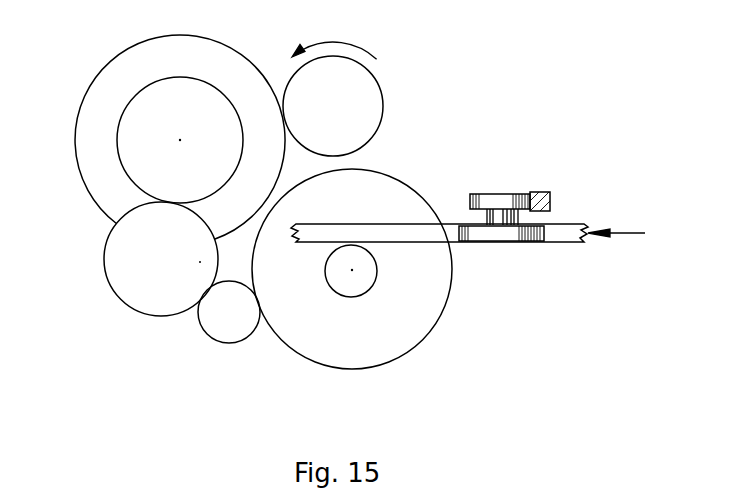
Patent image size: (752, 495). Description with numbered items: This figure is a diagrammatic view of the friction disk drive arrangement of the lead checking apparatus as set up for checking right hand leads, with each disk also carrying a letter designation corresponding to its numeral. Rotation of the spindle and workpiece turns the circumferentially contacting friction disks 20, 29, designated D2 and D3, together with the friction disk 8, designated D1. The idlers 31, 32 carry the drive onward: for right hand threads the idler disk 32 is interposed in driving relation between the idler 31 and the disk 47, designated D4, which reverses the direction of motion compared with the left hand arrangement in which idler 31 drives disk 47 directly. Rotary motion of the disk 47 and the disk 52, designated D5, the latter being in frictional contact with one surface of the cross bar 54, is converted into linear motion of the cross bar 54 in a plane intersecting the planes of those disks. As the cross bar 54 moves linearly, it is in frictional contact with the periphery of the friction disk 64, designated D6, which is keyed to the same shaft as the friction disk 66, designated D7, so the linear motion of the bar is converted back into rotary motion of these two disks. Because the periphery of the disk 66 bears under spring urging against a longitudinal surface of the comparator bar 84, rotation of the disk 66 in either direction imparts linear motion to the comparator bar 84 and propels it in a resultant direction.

The friction disk 20 is at (160, 44).
The friction disk 29 is at (127, 134).
The friction disk 8 is at (377, 125).
The idler disk 31 is at (112, 275).
The idler disk 32 is at (207, 330).
The friction disk 47 is at (440, 307).
The friction disk 52 is at (375, 267).
The cross bar 54 is at (566, 231).
The friction disk 64 is at (522, 234).
The friction disk 66 is at (505, 195).
The comparator bar 84 is at (545, 192).
The friction disk designation D1 is at (378, 98).
The friction disk designation D2 is at (112, 73).
The friction disk designation D3 is at (125, 152).
The friction disk designation D4 is at (321, 360).
The friction disk designation D5 is at (375, 278).
The friction disk designation D6 is at (508, 238).
The friction disk designation D7 is at (492, 196).